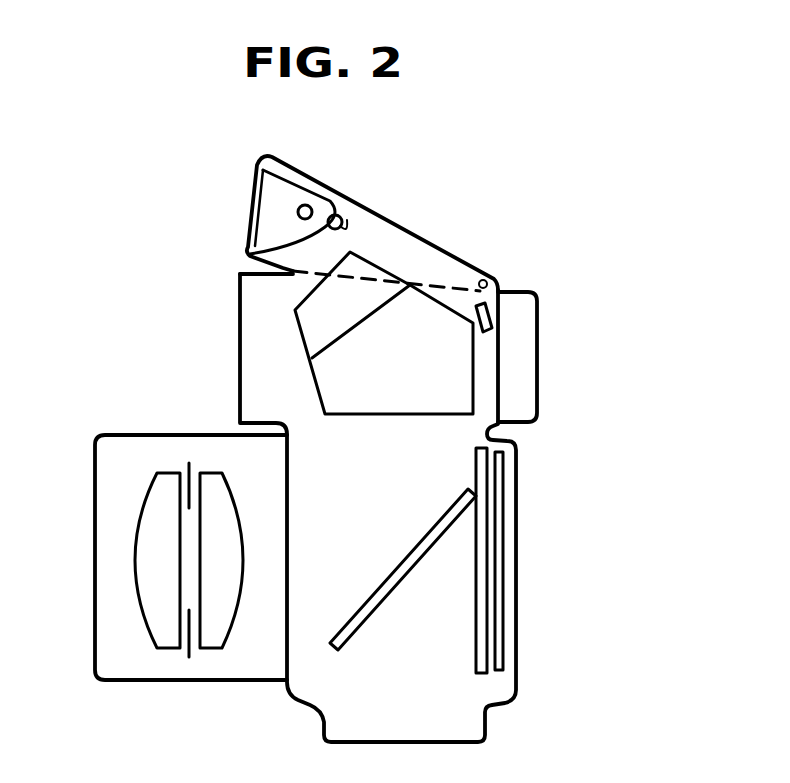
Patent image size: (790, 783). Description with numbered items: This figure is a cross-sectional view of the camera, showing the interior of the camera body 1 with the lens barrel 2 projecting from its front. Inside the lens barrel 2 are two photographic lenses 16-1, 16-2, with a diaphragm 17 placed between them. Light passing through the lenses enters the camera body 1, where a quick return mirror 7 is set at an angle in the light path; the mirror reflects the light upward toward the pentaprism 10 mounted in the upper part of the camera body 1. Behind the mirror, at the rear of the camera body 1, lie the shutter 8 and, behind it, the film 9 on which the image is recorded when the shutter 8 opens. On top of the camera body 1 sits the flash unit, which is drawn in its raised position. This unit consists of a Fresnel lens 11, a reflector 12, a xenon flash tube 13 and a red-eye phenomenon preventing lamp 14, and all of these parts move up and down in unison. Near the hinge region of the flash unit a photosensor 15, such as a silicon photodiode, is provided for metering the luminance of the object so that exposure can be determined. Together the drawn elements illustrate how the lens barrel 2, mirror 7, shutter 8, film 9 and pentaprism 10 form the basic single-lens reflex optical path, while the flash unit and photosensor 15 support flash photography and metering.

The camera body 1 is at (481, 722).
The lens barrel 2 is at (143, 680).
The quick return mirror 7 is at (402, 577).
The shutter 8 is at (483, 523).
The film 9 is at (502, 580).
The pentaprism 10 is at (370, 270).
The Fresnel lens 11 is at (257, 205).
The reflector 12 is at (298, 182).
The xenon flash tube 13 is at (308, 205).
The red-eye phenomenon preventing lamp 14 is at (348, 220).
The photosensor 15 is at (493, 310).
The photographic lens 16-1 is at (167, 482).
The photographic lens 16-2 is at (210, 642).
The diaphragm 17 is at (190, 470).